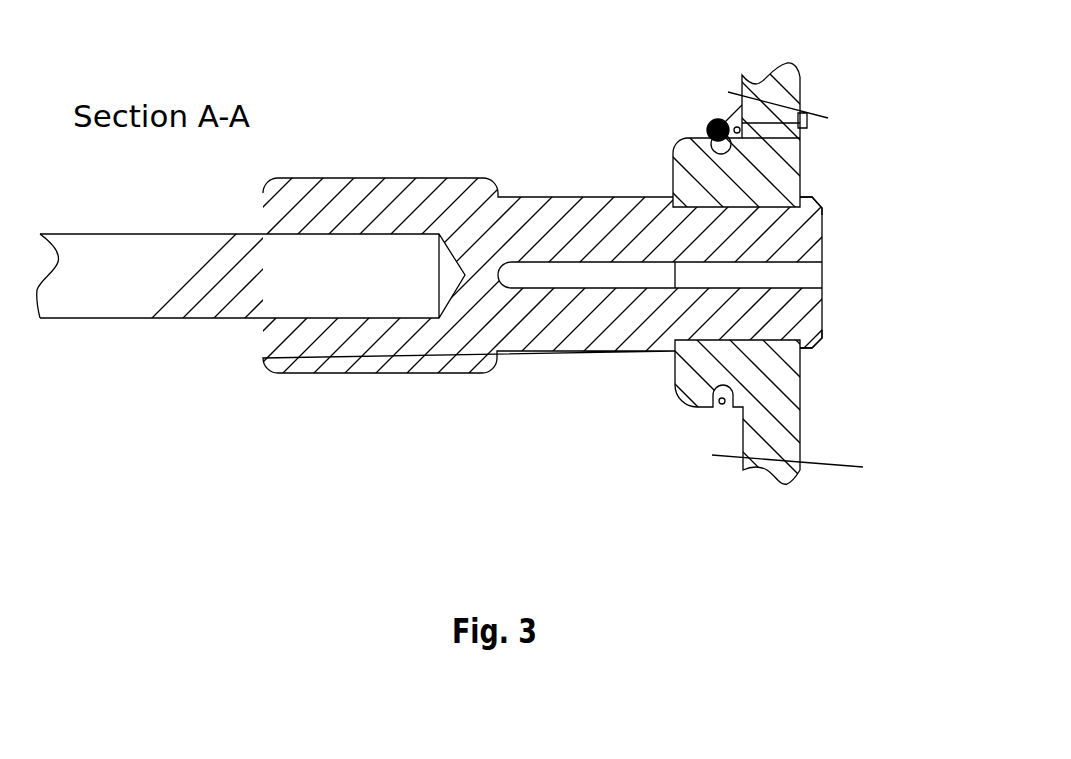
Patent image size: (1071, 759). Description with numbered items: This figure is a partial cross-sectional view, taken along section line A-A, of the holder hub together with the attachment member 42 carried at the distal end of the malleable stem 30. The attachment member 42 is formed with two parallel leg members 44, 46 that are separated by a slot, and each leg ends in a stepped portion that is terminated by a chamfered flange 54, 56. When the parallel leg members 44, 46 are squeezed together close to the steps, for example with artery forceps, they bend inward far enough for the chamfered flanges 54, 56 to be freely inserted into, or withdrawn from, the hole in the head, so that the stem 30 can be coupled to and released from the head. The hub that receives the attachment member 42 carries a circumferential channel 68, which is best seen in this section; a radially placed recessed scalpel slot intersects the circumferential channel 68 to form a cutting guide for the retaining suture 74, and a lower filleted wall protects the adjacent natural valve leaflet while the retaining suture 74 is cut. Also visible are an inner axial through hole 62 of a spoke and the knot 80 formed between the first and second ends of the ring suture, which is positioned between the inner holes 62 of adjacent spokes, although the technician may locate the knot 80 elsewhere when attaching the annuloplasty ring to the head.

The malleable stem 30 is at (95, 283).
The attachment member 42 is at (450, 115).
The parallel leg member 44 is at (528, 333).
The parallel leg member 46 is at (578, 220).
The chamfered flange 54 is at (822, 193).
The chamfered flange 56 is at (810, 330).
The inner axial through hole 62 is at (800, 130).
The circumferential channel 68 is at (717, 403).
The retaining suture 74 is at (723, 403).
The knot 80 is at (714, 118).